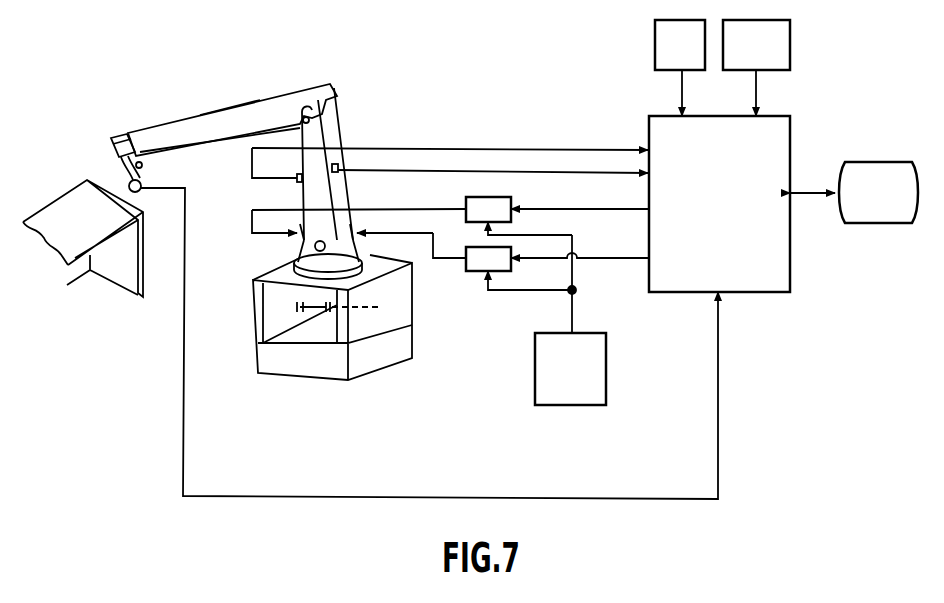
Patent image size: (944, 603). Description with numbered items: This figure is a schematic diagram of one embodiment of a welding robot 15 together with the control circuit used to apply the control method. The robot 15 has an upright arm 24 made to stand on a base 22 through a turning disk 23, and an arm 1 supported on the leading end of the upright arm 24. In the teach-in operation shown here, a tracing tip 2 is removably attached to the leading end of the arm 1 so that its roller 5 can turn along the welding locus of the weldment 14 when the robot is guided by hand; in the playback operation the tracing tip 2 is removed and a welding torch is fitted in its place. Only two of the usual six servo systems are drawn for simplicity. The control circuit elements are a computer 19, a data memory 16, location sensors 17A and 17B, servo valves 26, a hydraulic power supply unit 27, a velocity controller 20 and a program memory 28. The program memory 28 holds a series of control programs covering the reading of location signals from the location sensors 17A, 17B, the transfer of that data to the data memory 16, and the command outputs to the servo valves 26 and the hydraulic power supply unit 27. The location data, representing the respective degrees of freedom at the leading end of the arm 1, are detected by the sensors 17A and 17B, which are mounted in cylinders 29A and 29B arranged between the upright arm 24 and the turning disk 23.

The arm 1 is at (202, 120).
The tracing tip 2 is at (117, 168).
The roller 5 is at (134, 184).
The weldment 14 is at (107, 265).
The welding robot 15 is at (283, 92).
The data memory 16 is at (890, 203).
The location sensor 17A is at (340, 170).
The location sensor 17B is at (296, 182).
The computer 19 is at (730, 212).
The velocity controller 20 is at (692, 56).
The base 22 is at (404, 310).
The turning disk 23 is at (296, 262).
The upright arm 24 is at (310, 140).
The servo valve 26 is at (506, 202).
The hydraulic power supply unit 27 is at (582, 381).
The program memory 28 is at (768, 56).
The cylinder 29A is at (360, 239).
The cylinder 29B is at (300, 240).